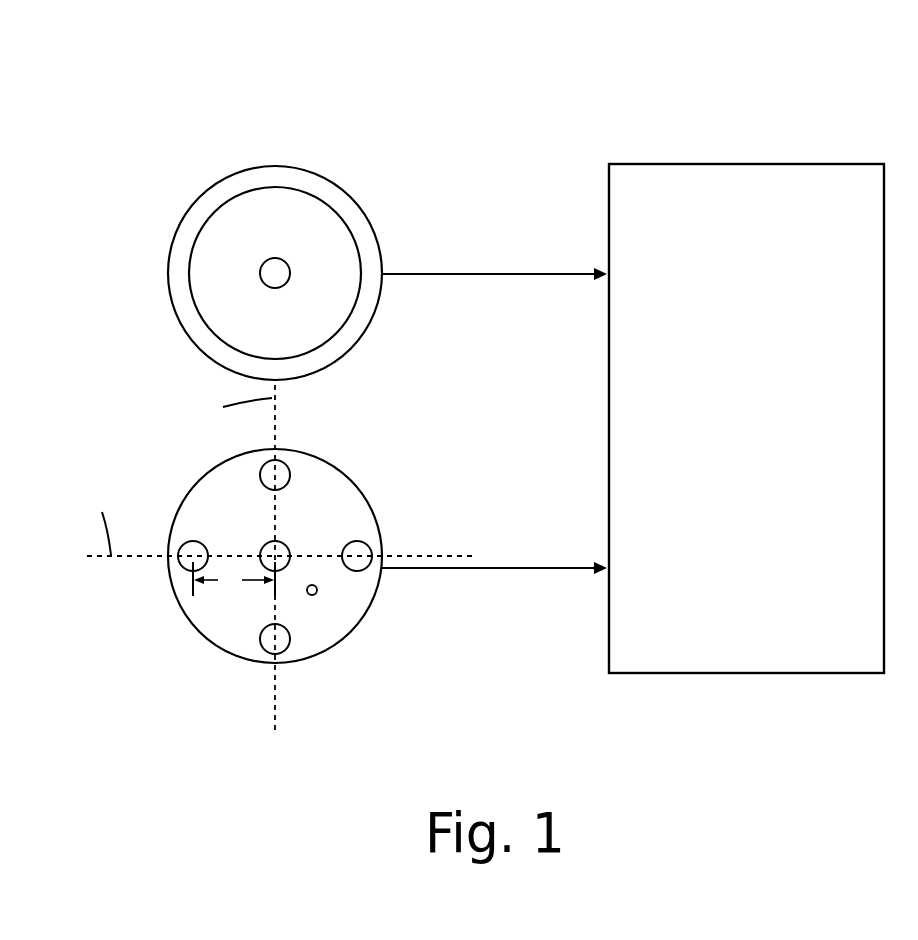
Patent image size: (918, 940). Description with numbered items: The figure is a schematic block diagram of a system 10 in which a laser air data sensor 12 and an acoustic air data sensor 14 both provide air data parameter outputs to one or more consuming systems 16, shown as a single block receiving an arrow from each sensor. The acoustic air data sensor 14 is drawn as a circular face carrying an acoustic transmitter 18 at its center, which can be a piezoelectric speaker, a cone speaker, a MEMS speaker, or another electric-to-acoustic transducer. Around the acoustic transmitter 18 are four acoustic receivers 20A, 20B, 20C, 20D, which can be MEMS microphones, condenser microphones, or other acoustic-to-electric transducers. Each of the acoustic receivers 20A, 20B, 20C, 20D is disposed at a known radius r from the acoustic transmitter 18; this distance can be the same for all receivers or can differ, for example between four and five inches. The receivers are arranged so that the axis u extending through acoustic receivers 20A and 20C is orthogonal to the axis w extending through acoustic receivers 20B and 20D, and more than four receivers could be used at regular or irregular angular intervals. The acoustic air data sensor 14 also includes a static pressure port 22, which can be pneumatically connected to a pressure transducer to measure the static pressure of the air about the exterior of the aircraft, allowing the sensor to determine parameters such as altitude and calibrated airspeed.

The system 10 is at (641, 94).
The laser air data sensor 12 is at (168, 262).
The acoustic air data sensor 14 is at (200, 478).
The consuming systems 16 is at (742, 521).
The acoustic transmitter 18 is at (286, 548).
The acoustic receiver 20A is at (284, 466).
The acoustic receiver 20B is at (364, 545).
The acoustic receiver 20C is at (262, 637).
The acoustic receiver 20D is at (180, 567).
The static pressure port 22 is at (316, 594).